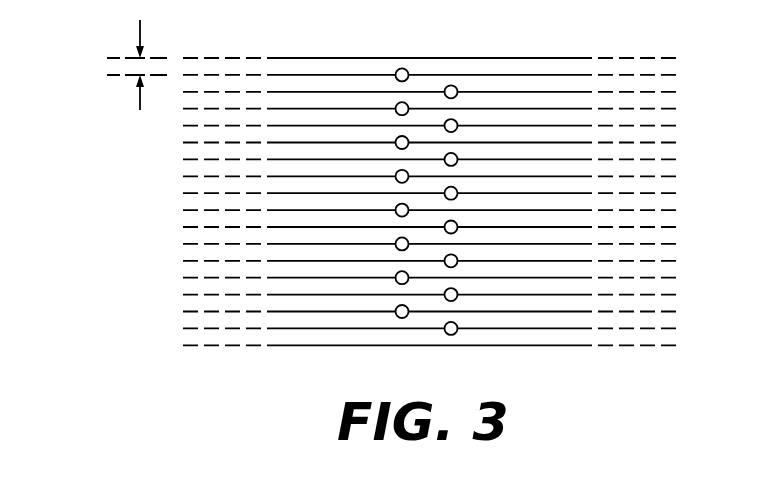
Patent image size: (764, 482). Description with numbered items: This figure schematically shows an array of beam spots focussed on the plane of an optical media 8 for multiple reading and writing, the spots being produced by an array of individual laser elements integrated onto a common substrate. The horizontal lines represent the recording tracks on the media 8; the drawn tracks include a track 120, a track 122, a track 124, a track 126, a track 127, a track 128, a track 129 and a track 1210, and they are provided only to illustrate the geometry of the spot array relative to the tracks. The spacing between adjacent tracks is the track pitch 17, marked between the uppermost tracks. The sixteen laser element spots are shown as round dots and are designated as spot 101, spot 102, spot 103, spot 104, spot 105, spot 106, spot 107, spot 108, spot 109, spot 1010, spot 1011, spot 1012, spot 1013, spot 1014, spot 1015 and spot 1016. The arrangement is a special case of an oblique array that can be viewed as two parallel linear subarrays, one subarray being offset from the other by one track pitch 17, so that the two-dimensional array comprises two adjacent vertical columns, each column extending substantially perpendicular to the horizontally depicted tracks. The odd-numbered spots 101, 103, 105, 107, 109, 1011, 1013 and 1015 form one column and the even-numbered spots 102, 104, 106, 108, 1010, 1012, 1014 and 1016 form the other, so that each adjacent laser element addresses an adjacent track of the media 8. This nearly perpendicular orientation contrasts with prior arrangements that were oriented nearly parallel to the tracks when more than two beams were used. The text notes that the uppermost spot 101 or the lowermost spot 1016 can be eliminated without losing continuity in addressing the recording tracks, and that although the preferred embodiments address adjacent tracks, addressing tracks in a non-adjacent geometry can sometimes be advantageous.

The optical media 8 is at (237, 354).
The track pitch 17 is at (140, 36).
The laser element spot 101 is at (400, 68).
The laser element spot 102 is at (449, 85).
The laser element spot 103 is at (397, 104).
The laser element spot 104 is at (458, 124).
The laser element spot 105 is at (402, 142).
The laser element spot 106 is at (451, 159).
The laser element spot 107 is at (402, 176).
The laser element spot 108 is at (451, 193).
The laser element spot 109 is at (402, 210).
The laser element spot 1010 is at (451, 227).
The laser element spot 1011 is at (402, 243).
The laser element spot 1012 is at (451, 260).
The laser element spot 1013 is at (396, 283).
The laser element spot 1014 is at (458, 299).
The laser element spot 1015 is at (403, 318).
The laser element spot 1016 is at (456, 335).
The track 120 is at (650, 59).
The track 122 is at (656, 91).
The track 124 is at (646, 126).
The track 126 is at (185, 157).
The track 127 is at (194, 176).
The track 128 is at (194, 193).
The track 129 is at (194, 209).
The track 1210 is at (190, 226).